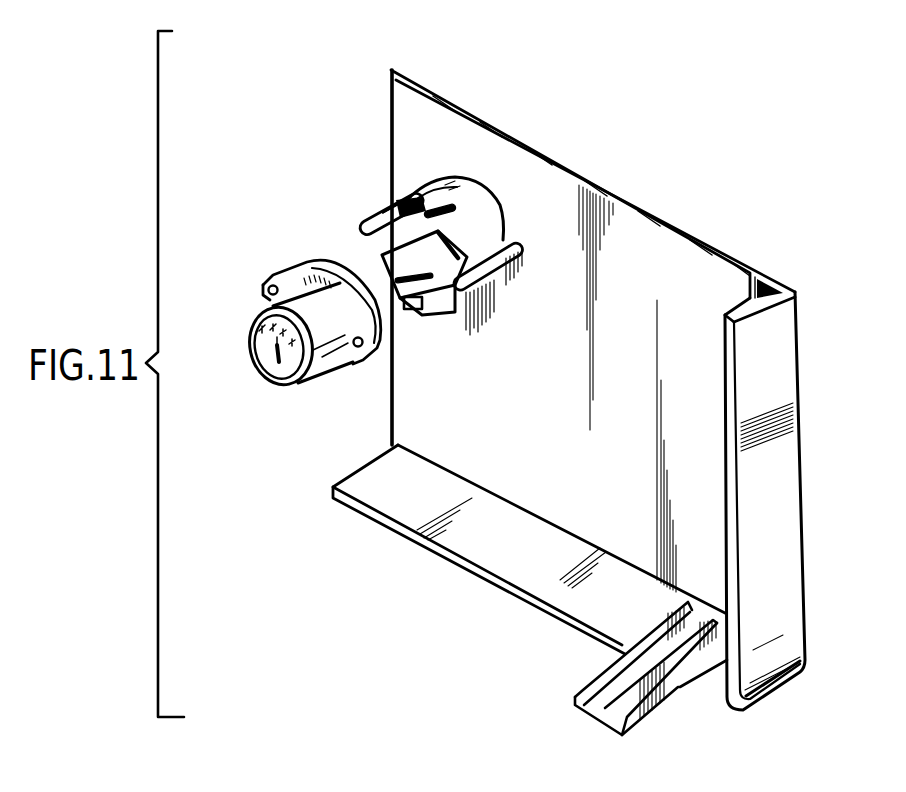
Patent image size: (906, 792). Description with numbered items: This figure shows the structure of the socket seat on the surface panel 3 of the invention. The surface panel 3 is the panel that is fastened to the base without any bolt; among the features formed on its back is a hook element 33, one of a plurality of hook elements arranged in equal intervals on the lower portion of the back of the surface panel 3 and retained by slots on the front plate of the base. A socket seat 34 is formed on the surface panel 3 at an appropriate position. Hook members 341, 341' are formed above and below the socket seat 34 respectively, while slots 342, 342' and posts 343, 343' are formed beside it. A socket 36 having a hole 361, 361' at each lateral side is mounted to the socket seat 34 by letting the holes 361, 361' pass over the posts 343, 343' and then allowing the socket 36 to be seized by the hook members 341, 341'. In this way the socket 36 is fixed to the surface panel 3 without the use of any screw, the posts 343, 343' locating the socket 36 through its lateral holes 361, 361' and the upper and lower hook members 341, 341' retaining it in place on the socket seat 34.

The surface panel 3 is at (643, 203).
The hook element 33 is at (580, 690).
The socket seat 34 is at (457, 186).
The hook member 341 is at (428, 359).
The hook member 341' is at (370, 140).
The slot 342 is at (466, 334).
The slot 342' is at (363, 230).
The post 343 is at (516, 284).
The post 343' is at (355, 192).
The socket 36 is at (281, 382).
The hole 361 is at (322, 359).
The hole 361' is at (271, 301).